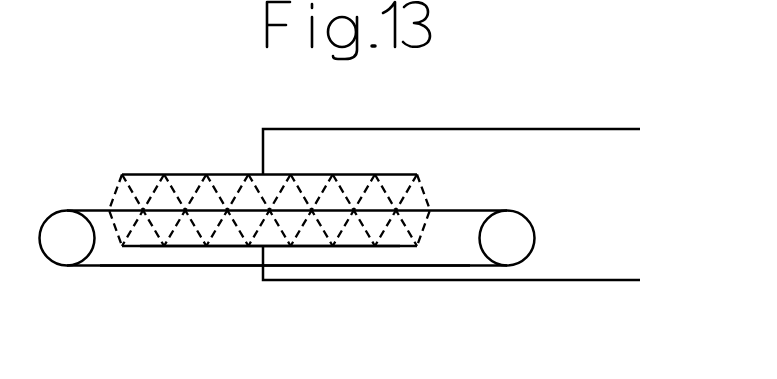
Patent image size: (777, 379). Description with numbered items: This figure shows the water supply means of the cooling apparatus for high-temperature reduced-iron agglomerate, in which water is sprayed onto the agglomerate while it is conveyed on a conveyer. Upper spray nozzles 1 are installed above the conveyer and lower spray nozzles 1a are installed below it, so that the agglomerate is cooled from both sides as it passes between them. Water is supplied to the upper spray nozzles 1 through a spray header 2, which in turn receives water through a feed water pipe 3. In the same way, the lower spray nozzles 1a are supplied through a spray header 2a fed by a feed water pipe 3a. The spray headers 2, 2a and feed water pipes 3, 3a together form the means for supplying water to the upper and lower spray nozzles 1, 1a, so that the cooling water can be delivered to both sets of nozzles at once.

The upper spray nozzle 1 is at (117, 192).
The lower spray nozzle 1a is at (109, 233).
The spray header 2 is at (190, 173).
The spray header 2a is at (222, 247).
The feed water pipe 3 is at (617, 130).
The feed water pipe 3a is at (617, 282).